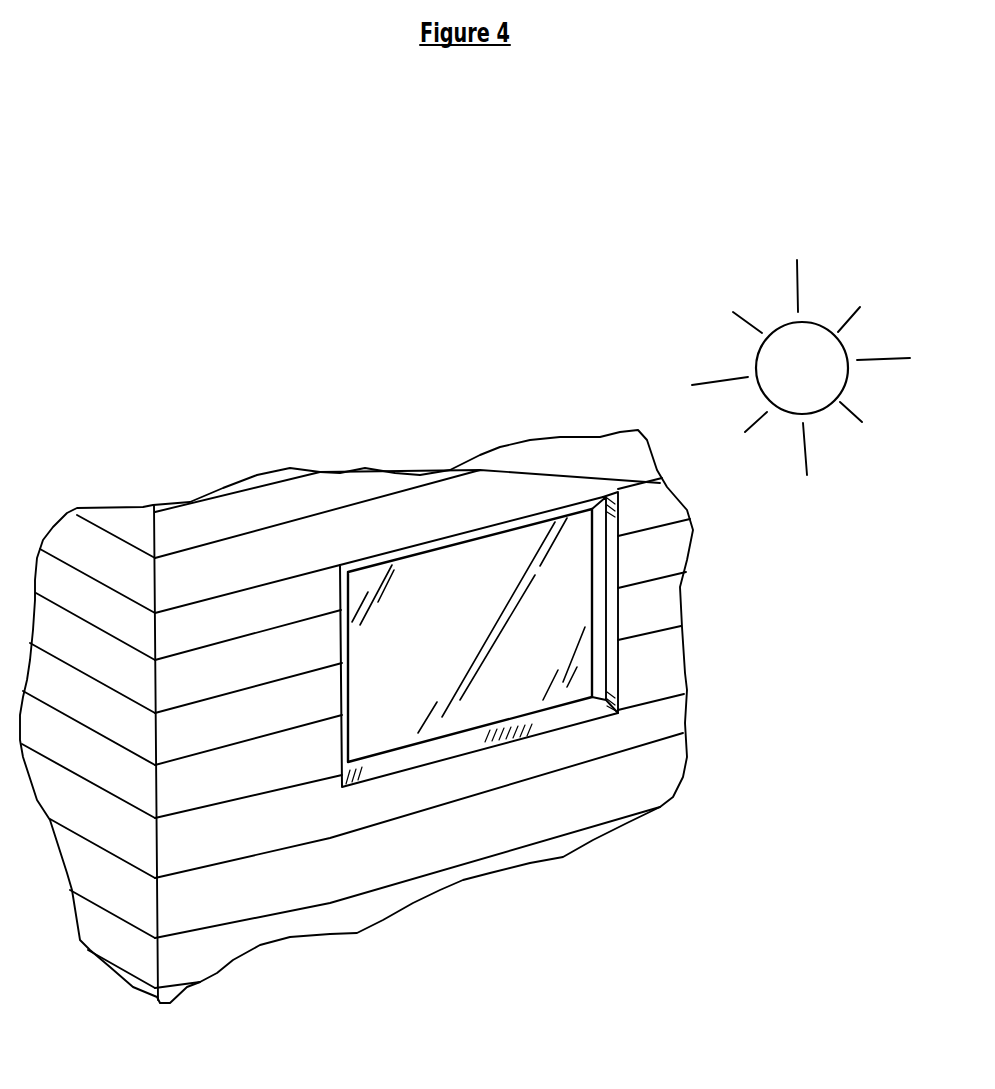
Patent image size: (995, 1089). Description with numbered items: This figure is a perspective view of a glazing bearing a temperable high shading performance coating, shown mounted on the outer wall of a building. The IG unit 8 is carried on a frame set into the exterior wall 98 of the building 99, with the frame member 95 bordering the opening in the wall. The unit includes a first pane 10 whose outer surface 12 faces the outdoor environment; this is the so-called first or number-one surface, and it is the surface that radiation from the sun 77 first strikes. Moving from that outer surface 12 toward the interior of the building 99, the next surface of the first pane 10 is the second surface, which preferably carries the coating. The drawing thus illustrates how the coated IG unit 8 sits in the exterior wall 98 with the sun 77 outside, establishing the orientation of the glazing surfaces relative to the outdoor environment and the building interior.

The IG unit 8 is at (521, 702).
The first pane 10 is at (483, 556).
The outer surface 12 is at (461, 579).
The sun 77 is at (807, 380).
The window frame jamb 95 is at (573, 512).
The exterior wall 98 is at (253, 842).
The building 99 is at (233, 948).